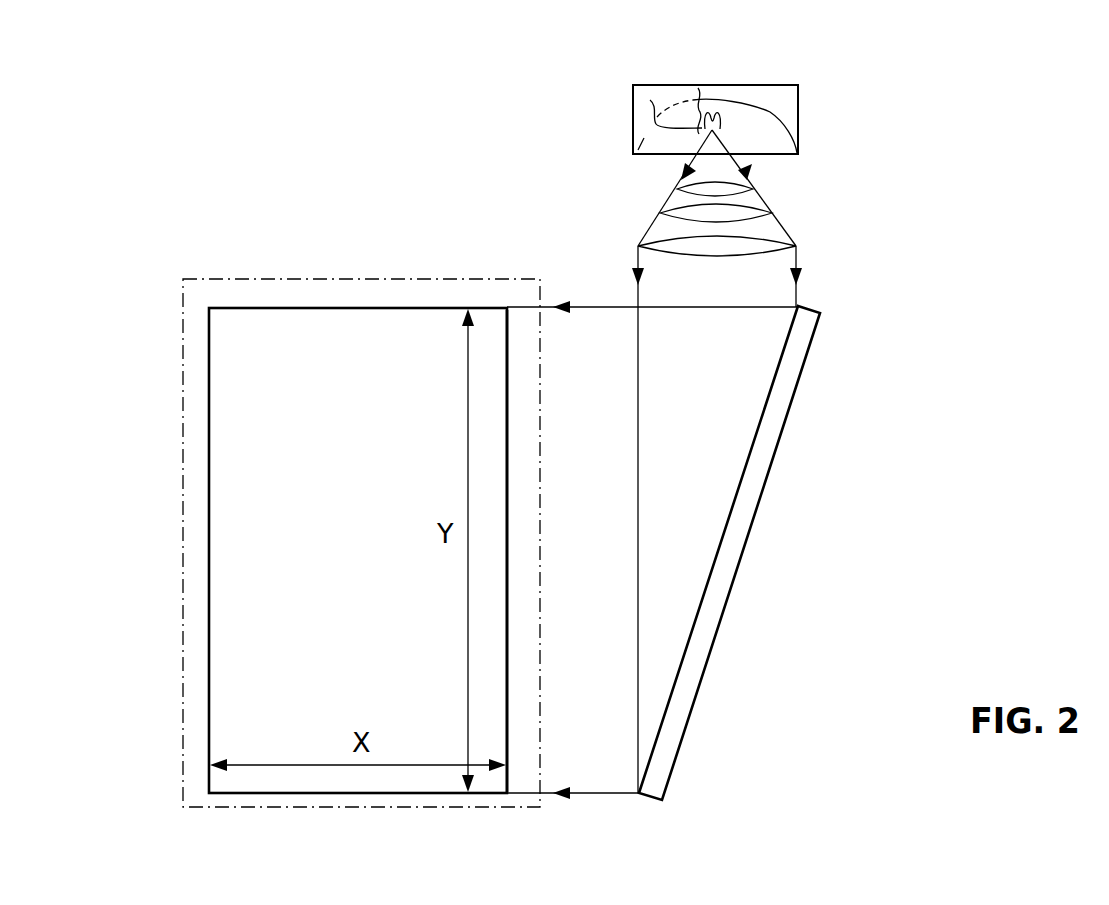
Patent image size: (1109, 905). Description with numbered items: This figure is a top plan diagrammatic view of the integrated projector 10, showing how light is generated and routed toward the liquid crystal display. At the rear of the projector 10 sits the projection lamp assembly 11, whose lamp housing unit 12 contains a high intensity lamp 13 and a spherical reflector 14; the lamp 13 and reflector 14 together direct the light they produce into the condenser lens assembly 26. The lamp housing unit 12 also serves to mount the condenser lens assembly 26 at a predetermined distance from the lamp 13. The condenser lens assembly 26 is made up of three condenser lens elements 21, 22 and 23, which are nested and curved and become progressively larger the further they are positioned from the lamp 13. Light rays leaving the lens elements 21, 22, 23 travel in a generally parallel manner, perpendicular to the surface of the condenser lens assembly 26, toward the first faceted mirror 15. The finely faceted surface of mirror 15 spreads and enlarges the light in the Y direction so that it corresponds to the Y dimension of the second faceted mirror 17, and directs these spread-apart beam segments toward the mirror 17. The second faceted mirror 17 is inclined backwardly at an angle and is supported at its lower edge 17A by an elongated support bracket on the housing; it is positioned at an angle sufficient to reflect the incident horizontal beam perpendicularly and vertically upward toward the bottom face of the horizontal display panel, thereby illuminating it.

The integrated projector 10 is at (288, 182).
The projection lamp assembly 11 is at (768, 74).
The lamp housing unit 12 is at (720, 84).
The high intensity lamp 13 is at (650, 100).
The spherical reflector 14 is at (758, 108).
The first faceted mirror 15 is at (792, 455).
The second faceted mirror 17 is at (198, 489).
The lower edge of mirror 17A is at (508, 737).
The condenser lens element 21 is at (752, 187).
The condenser lens element 22 is at (660, 213).
The condenser lens element 23 is at (640, 244).
The condenser lens assembly 26 is at (805, 216).